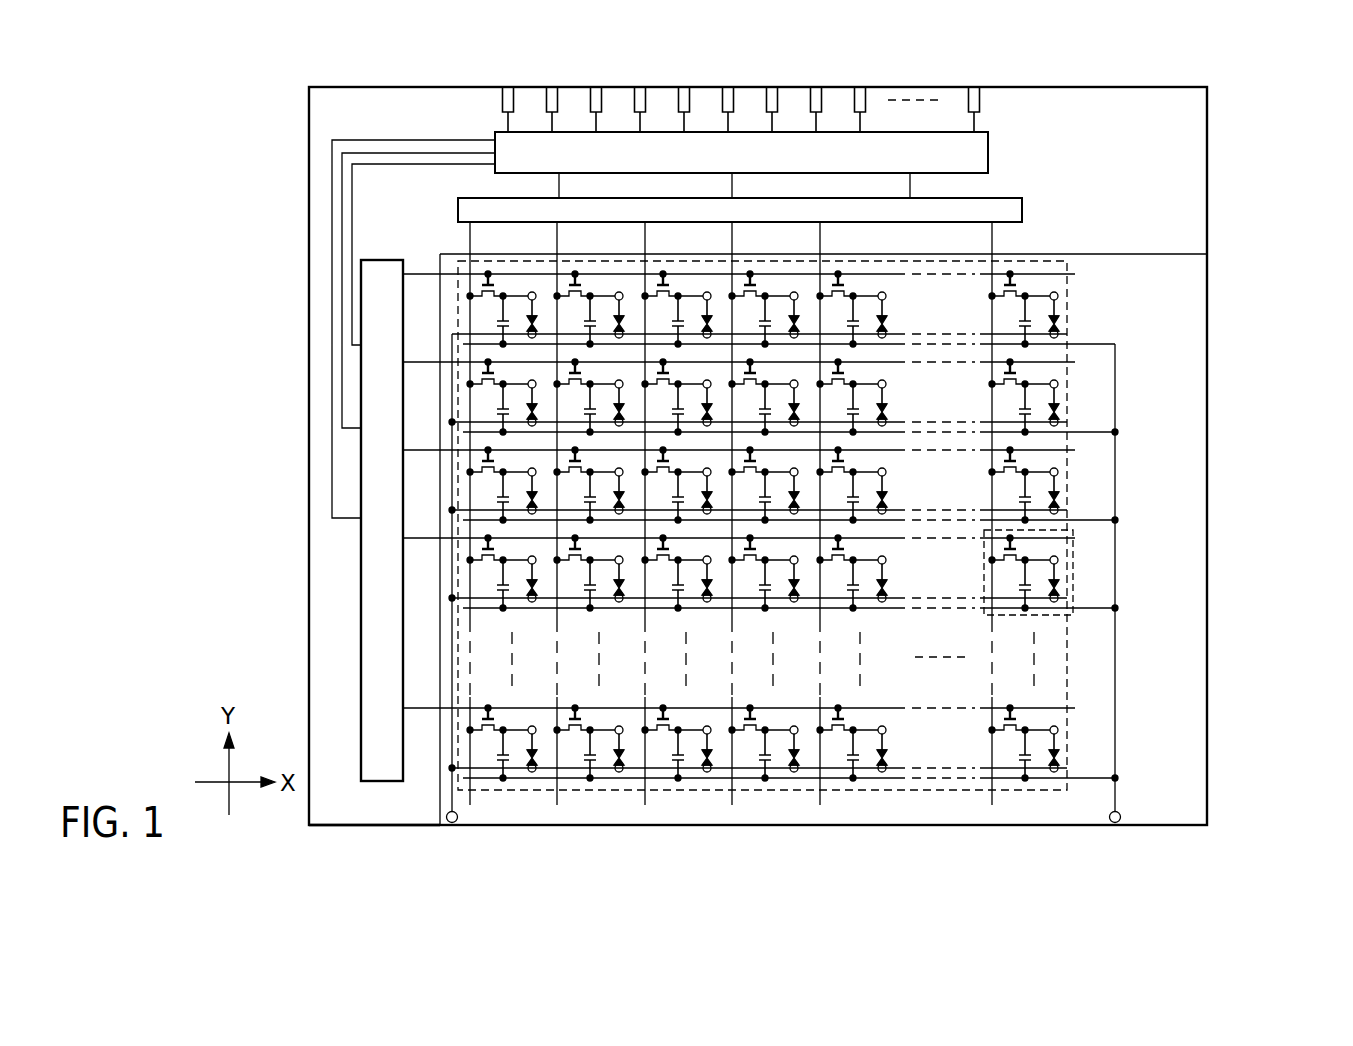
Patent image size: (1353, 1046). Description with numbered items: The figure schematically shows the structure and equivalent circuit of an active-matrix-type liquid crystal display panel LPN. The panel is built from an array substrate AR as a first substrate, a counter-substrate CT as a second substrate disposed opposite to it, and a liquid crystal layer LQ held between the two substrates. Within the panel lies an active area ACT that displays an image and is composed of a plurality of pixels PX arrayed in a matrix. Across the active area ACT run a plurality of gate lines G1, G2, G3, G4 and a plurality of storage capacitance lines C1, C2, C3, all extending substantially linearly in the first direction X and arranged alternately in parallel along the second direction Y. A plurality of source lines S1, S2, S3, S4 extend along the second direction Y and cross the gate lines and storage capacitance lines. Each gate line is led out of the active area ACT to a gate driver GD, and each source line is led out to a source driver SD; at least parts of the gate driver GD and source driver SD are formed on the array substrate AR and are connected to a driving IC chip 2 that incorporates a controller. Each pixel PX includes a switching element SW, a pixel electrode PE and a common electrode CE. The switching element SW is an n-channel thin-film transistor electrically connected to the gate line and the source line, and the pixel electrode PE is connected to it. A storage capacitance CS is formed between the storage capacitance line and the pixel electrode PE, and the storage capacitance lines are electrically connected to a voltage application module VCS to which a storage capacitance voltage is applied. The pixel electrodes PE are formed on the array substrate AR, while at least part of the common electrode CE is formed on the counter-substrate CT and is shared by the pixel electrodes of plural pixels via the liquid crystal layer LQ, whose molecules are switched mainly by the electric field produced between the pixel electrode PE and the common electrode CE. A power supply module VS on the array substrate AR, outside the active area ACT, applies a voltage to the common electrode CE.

The liquid crystal display panel LPN is at (1236, 105).
The driving IC chip 2 is at (989, 132).
The source driver SD is at (1024, 208).
The gate driver GD is at (360, 637).
The counter-substrate CT is at (1172, 254).
The active area ACT is at (1067, 378).
The array substrate AR is at (378, 814).
The source line S1 is at (474, 243).
The source line S2 is at (561, 243).
The source line S3 is at (649, 243).
The source line S4 is at (736, 243).
The gate line G1 is at (417, 272).
The gate line G2 is at (417, 360).
The gate line G3 is at (417, 448).
The gate line G4 is at (417, 536).
The storage capacitance line C1 is at (1091, 344).
The storage capacitance line C2 is at (1091, 432).
The storage capacitance line C3 is at (1091, 520).
The pixel PX is at (1042, 580).
The switching element SW is at (994, 548).
The storage capacitance CS is at (1012, 582).
The pixel electrode PE is at (1058, 558).
The liquid crystal layer LQ is at (1060, 582).
The common electrode CE is at (1059, 598).
The power supply module VS is at (456, 822).
The voltage application module VCS is at (1121, 814).